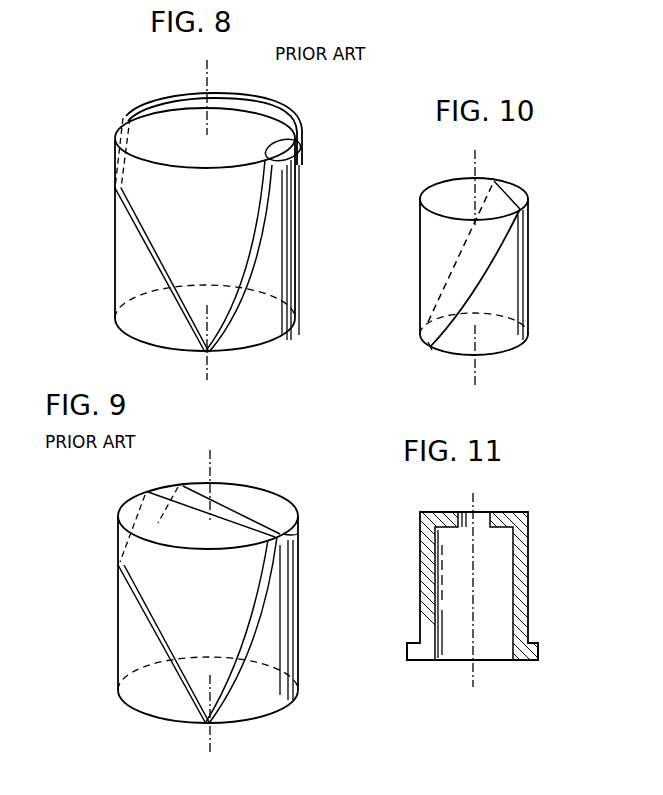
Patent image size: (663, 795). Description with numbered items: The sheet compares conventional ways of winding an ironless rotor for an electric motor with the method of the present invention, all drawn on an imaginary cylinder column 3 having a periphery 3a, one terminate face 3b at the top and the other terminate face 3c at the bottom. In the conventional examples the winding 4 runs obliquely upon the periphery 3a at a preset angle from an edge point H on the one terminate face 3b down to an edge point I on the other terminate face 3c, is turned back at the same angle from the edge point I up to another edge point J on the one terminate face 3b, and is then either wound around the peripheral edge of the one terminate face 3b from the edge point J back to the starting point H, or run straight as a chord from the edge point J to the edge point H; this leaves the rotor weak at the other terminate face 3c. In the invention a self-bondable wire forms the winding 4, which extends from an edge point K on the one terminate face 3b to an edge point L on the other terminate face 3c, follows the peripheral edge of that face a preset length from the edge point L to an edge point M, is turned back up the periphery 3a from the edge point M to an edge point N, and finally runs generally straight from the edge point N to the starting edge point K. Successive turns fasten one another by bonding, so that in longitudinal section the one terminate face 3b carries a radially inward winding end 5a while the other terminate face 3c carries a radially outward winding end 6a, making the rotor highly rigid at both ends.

In FIG. 8, the imaginary column 3 is at (296, 239).
In FIG. 9, the imaginary column 3 is at (298, 619).
In FIG. 10, the imaginary column 3 is at (529, 256).
In FIG. 8, the periphery 3a is at (297, 262).
In FIG. 9, the periphery 3a is at (299, 640).
In FIG. 10, the periphery 3a is at (520, 290).
In FIG. 8, the one terminate face 3b is at (260, 122).
In FIG. 9, the one terminate face 3b is at (262, 500).
In FIG. 10, the one terminate face 3b is at (497, 205).
In FIG. 8, the other terminate face 3c is at (268, 338).
In FIG. 9, the other terminate face 3c is at (258, 718).
In FIG. 10, the other terminate face 3c is at (510, 355).
In FIG. 8, the winding 4 is at (260, 192).
In FIG. 9, the winding 4 is at (240, 658).
In FIG. 8, the edge point H is at (125, 118).
In FIG. 9, the edge point H is at (148, 492).
In FIG. 8, the edge point J is at (301, 136).
In FIG. 9, the edge point J is at (298, 534).
In FIG. 8, the edge point I is at (208, 67).
In FIG. 9, the edge point I is at (212, 456).
In FIG. 10, the edge point I is at (478, 160).
In FIG. 11, the edge point I is at (473, 500).
In FIG. 10, the edge point K is at (496, 179).
In FIG. 10, the edge point N is at (522, 213).
In FIG. 10, the edge point L is at (430, 322).
In FIG. 10, the edge point M is at (431, 350).
In FIG. 11, the winding end 5a is at (500, 512).
In FIG. 11, the winding end 6a is at (538, 645).